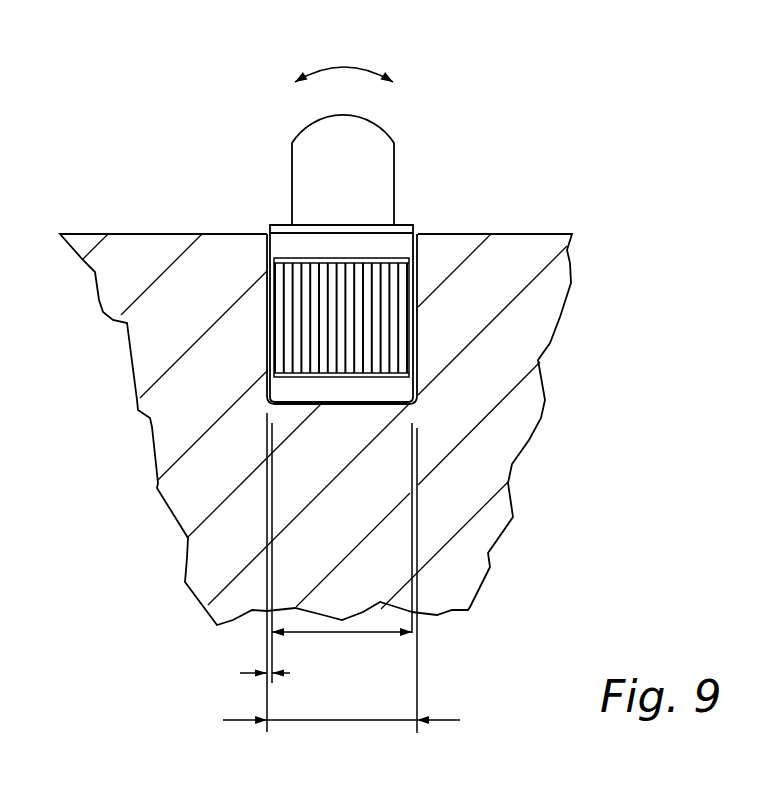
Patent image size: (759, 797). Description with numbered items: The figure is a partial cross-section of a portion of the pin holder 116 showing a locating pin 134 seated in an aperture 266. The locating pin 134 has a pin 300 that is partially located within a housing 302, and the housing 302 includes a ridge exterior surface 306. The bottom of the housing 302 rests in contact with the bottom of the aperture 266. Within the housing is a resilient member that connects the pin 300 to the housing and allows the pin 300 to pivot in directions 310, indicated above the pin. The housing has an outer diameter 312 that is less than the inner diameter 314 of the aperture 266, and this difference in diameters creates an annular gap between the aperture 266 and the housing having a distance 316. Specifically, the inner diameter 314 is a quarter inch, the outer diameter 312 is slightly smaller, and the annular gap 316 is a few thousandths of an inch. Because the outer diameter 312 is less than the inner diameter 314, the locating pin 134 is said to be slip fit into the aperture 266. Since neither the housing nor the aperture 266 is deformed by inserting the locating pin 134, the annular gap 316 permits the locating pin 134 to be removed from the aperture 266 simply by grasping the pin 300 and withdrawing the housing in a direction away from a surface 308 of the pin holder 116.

The directions 310 is at (338, 64).
The locating pin 134 is at (444, 236).
The pin 300 is at (370, 168).
The housing 302 is at (372, 248).
The surface 308 is at (184, 226).
The ridge exterior surface 306 is at (378, 318).
The aperture 266 is at (432, 381).
The pin holder 116 is at (468, 482).
The outer diameter 312 is at (362, 633).
The annular gap 316 is at (248, 672).
The inner diameter 314 is at (237, 718).